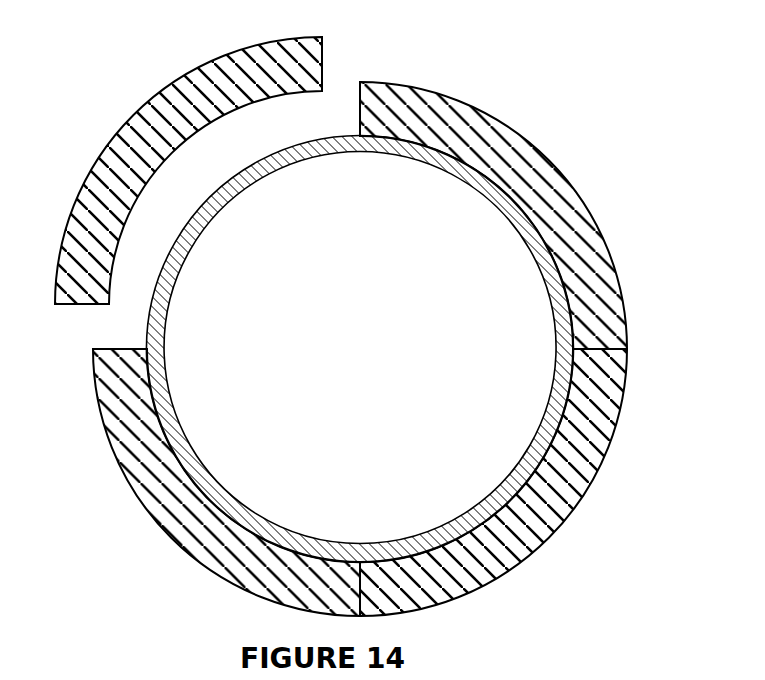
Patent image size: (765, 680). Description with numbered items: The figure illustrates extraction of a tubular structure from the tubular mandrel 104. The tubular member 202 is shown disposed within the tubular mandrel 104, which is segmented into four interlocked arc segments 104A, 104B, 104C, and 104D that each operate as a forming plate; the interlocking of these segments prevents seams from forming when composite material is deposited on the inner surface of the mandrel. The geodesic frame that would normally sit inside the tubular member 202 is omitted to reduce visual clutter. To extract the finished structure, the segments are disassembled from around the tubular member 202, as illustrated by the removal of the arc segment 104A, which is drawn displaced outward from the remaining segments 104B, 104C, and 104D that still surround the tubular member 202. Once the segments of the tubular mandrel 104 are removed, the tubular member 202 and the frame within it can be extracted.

The tubular mandrel 104 is at (354, 318).
The arc segment 104A is at (178, 98).
The arc segment 104B is at (160, 503).
The arc segment 104C is at (543, 487).
The arc segment 104D is at (462, 113).
The tubular member 202 is at (297, 153).